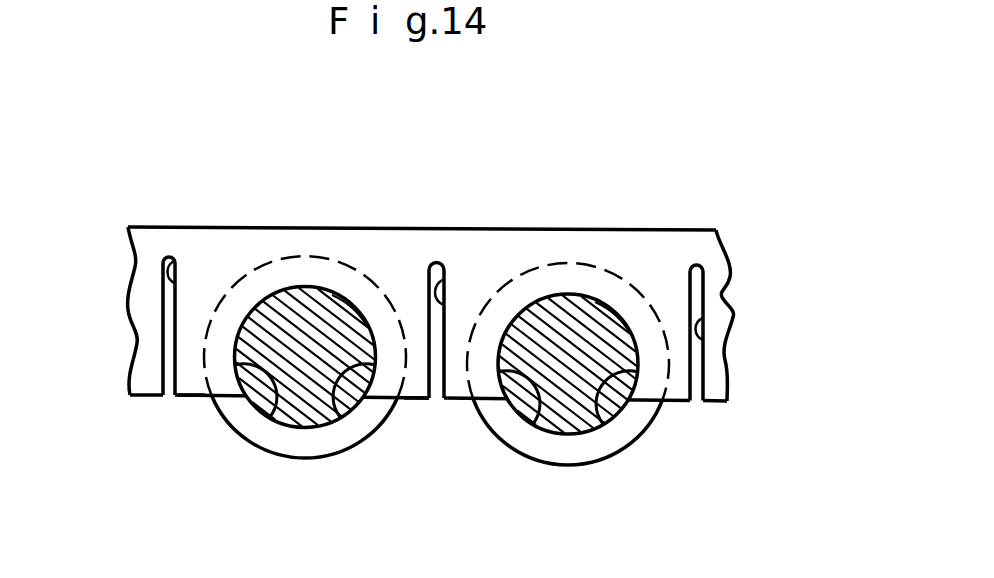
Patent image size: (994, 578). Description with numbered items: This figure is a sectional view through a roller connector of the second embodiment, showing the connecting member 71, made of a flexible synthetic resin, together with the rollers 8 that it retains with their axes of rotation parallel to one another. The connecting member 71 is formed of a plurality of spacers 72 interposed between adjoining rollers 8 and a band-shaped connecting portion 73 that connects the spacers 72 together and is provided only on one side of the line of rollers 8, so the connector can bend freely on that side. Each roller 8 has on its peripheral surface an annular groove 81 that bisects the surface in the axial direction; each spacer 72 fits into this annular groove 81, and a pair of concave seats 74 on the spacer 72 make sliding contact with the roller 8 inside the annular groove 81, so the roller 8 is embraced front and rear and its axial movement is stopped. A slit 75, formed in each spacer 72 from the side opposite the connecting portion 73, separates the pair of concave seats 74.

The connecting member 71 is at (665, 218).
The spacer 72 is at (418, 346).
The connecting portion 73 is at (306, 256).
The concave seat 74 is at (270, 410).
The slit 75 is at (171, 257).
The roller 8 is at (386, 418).
The annular groove 81 is at (260, 289).